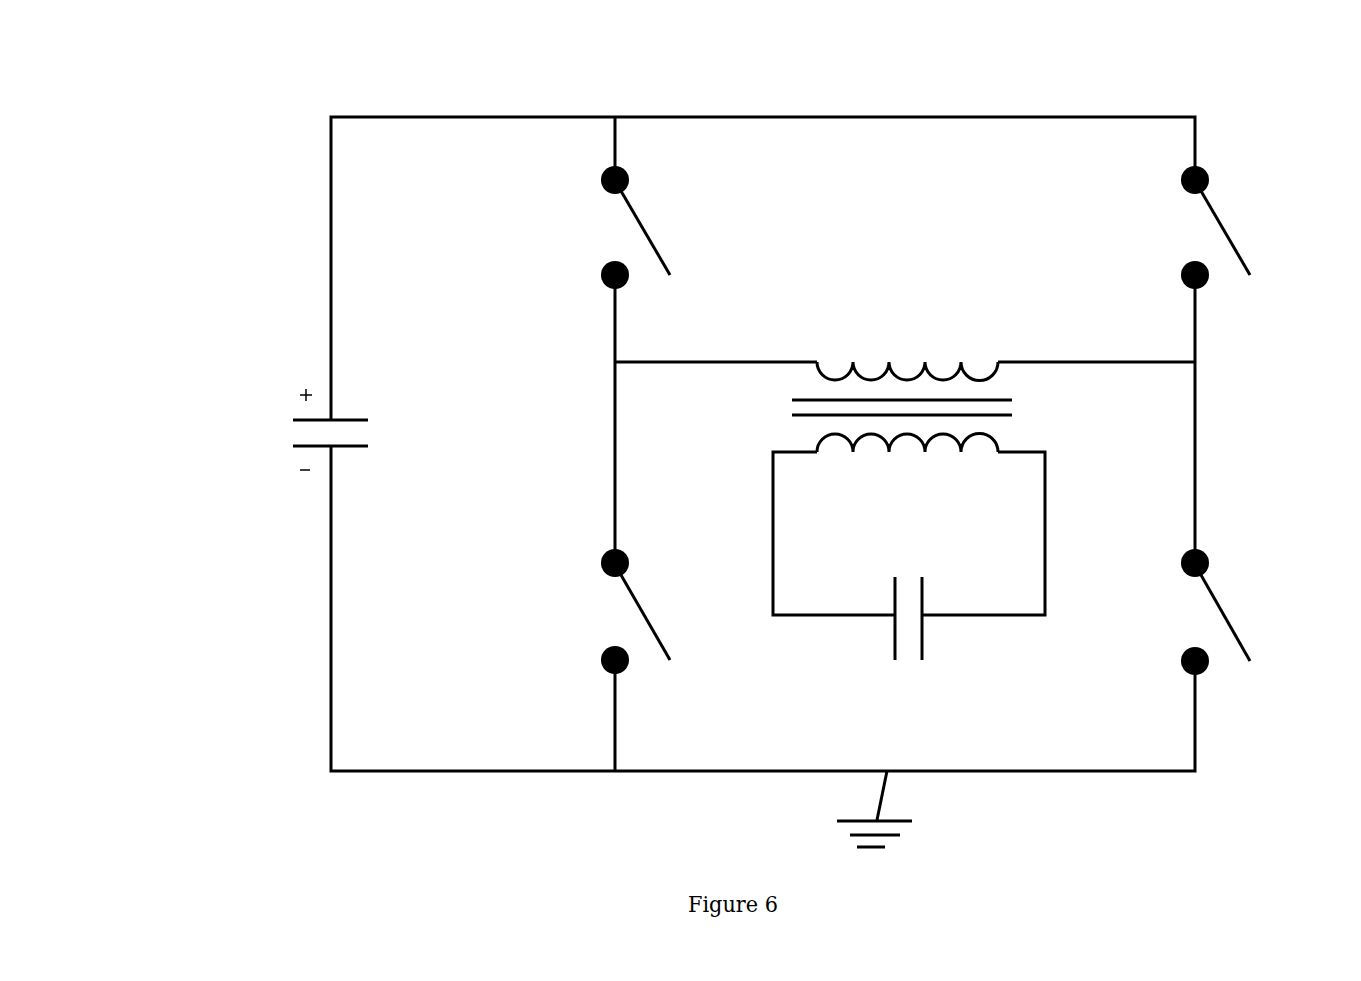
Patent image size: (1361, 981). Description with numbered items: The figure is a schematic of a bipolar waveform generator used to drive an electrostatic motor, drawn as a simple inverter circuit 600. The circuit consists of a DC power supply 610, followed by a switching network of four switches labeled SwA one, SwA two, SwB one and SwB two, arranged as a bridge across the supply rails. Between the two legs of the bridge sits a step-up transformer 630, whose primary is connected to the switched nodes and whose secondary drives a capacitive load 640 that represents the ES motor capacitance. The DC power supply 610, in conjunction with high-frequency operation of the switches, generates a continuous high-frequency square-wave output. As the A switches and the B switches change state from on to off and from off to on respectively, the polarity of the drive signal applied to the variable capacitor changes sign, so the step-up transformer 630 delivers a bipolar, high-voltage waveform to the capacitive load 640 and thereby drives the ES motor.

The inverter circuit 600 is at (268, 122).
The DC power supply 610 is at (282, 394).
The step-up transformer 630 is at (991, 350).
The capacitive load 640 is at (936, 565).